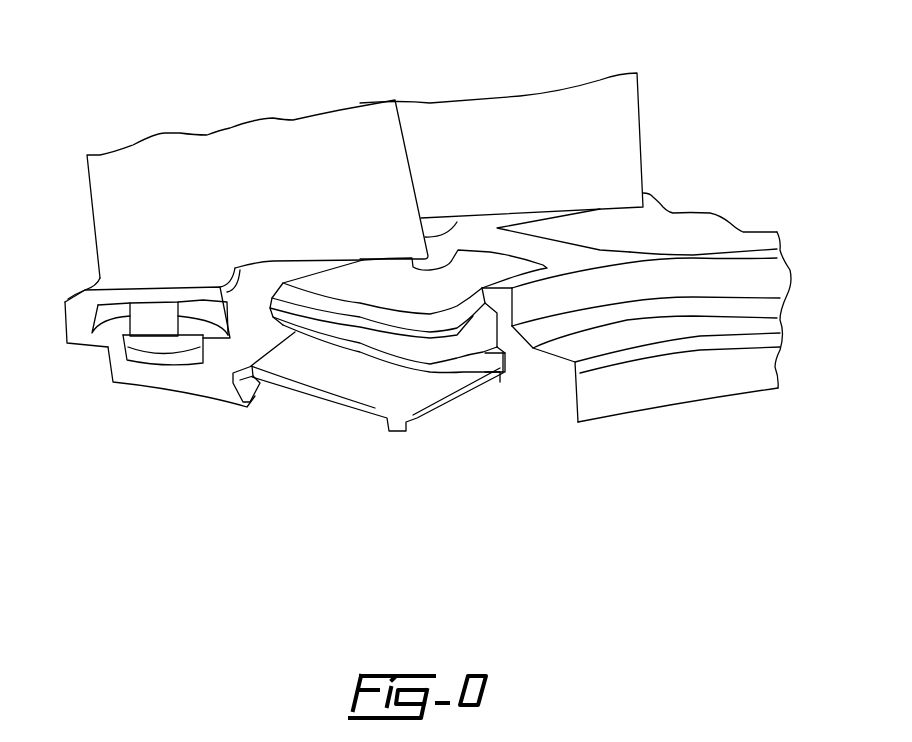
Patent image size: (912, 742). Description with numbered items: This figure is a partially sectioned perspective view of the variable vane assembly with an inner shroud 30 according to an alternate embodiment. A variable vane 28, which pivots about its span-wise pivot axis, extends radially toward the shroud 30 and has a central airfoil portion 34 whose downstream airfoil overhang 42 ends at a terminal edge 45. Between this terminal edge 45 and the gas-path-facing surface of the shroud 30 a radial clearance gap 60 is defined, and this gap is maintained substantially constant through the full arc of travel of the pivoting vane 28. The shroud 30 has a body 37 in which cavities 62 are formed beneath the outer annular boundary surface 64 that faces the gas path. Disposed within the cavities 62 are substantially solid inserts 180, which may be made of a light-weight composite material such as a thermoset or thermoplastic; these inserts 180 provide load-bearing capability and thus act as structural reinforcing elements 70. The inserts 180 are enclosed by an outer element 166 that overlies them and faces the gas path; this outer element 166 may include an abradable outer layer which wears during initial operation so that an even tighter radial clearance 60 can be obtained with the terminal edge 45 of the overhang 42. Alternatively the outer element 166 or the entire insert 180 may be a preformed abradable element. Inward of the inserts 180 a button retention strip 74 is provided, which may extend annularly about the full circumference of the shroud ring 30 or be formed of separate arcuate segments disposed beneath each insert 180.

The variable vane 28 is at (147, 232).
The inner shroud 30 is at (760, 262).
The central airfoil portion 34 is at (304, 163).
The body of the shroud 37 is at (557, 332).
The airfoil overhang 42 is at (382, 297).
The terminal edge 45 is at (458, 250).
The radial clearance gap 60 is at (382, 245).
The cavities 62 is at (495, 383).
The outer annular boundary surface 64 is at (563, 258).
The structural reinforcing elements 70 is at (453, 372).
The button retention strip 74 is at (377, 410).
The outer element 166 is at (513, 267).
The solid inserts 180 is at (470, 457).